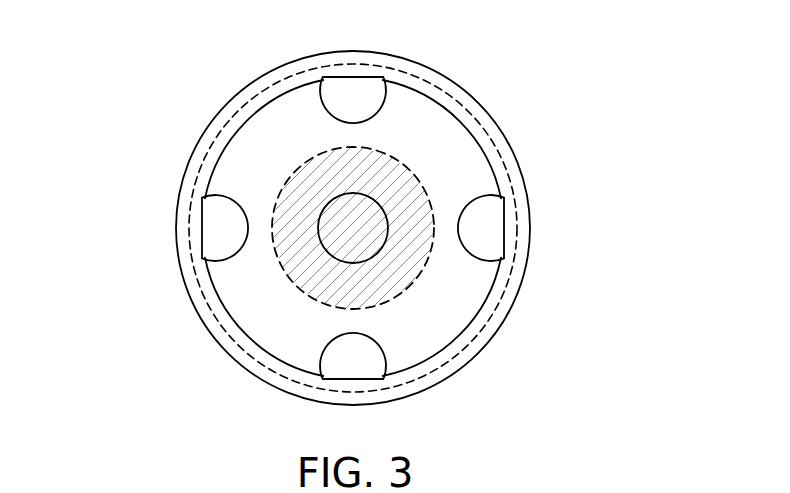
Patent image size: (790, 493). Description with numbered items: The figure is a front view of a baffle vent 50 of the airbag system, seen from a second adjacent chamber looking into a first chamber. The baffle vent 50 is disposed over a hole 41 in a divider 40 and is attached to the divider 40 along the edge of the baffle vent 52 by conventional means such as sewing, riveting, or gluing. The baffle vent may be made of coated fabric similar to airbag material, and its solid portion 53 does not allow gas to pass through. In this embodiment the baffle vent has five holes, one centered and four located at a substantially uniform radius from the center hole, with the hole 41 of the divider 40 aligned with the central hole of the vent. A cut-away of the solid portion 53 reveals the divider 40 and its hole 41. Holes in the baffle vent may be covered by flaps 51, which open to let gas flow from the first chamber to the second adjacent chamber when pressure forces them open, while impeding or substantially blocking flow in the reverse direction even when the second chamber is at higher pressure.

The divider 40 is at (325, 273).
The hole 41 is at (362, 220).
The baffle vent 50 is at (532, 121).
The flaps 51 is at (358, 92).
The edge of the baffle vent 52 is at (500, 303).
The solid portion of the baffle vent 53 is at (255, 292).